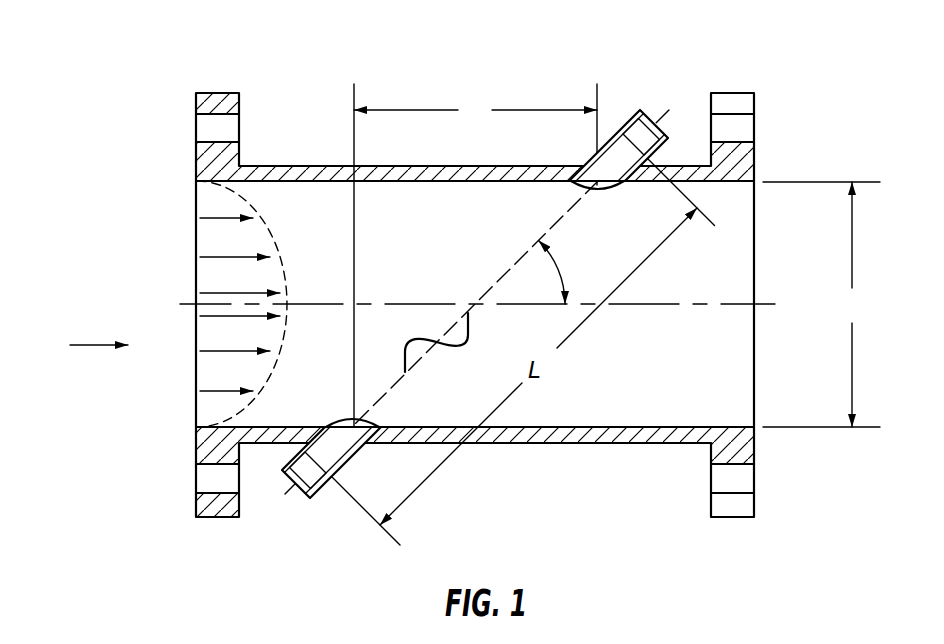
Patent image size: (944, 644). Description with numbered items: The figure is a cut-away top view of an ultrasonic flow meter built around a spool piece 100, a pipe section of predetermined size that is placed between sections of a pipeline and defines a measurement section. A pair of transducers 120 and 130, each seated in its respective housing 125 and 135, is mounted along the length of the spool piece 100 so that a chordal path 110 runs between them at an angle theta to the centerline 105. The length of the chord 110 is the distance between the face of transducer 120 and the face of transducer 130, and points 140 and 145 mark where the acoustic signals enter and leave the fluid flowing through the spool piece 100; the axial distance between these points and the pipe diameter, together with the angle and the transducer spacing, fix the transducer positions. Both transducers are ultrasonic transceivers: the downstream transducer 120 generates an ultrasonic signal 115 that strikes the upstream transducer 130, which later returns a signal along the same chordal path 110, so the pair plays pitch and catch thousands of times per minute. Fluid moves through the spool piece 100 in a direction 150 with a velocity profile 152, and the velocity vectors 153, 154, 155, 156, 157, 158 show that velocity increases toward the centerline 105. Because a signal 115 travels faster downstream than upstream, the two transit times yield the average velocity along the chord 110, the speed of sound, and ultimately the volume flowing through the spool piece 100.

The spool piece 100 is at (213, 92).
The centerline 105 is at (758, 305).
The path 110 is at (516, 263).
The ultrasonic signal 115 is at (446, 352).
The downstream transducer 120 is at (660, 109).
The housing 125 is at (626, 124).
The upstream transducer 130 is at (302, 494).
The housing 135 is at (340, 466).
The point 140 is at (594, 188).
The point 145 is at (350, 420).
The direction 150 is at (100, 347).
The velocity profile 152 is at (253, 218).
The velocity vector 153 is at (220, 217).
The velocity vector 154 is at (217, 257).
The velocity vector 155 is at (217, 293).
The velocity vector 156 is at (217, 316).
The velocity vector 157 is at (217, 351).
The velocity vector 158 is at (217, 391).